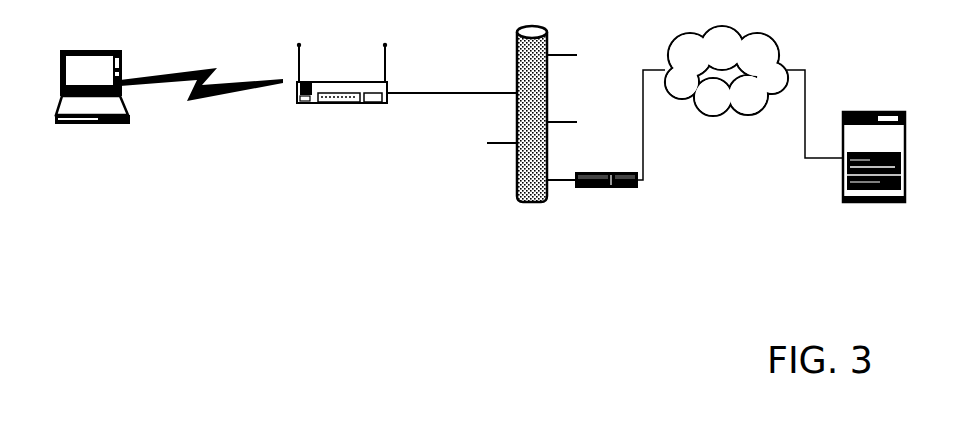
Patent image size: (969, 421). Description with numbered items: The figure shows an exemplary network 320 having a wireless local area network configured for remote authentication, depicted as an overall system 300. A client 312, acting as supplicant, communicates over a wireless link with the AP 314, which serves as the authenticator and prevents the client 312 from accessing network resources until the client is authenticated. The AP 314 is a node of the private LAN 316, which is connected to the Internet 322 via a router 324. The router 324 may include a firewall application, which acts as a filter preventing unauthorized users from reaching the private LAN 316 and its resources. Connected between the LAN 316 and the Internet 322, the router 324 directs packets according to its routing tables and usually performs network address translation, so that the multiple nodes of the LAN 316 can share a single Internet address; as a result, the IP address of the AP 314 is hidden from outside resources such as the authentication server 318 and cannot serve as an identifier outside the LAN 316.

The network system 300 is at (475, 153).
The client 312 is at (91, 110).
The AP 314 is at (372, 96).
The private LAN 316 is at (532, 114).
The authentication server 318 is at (873, 181).
The network 320 is at (393, 64).
The Internet 322 is at (754, 92).
The router 324 is at (606, 153).